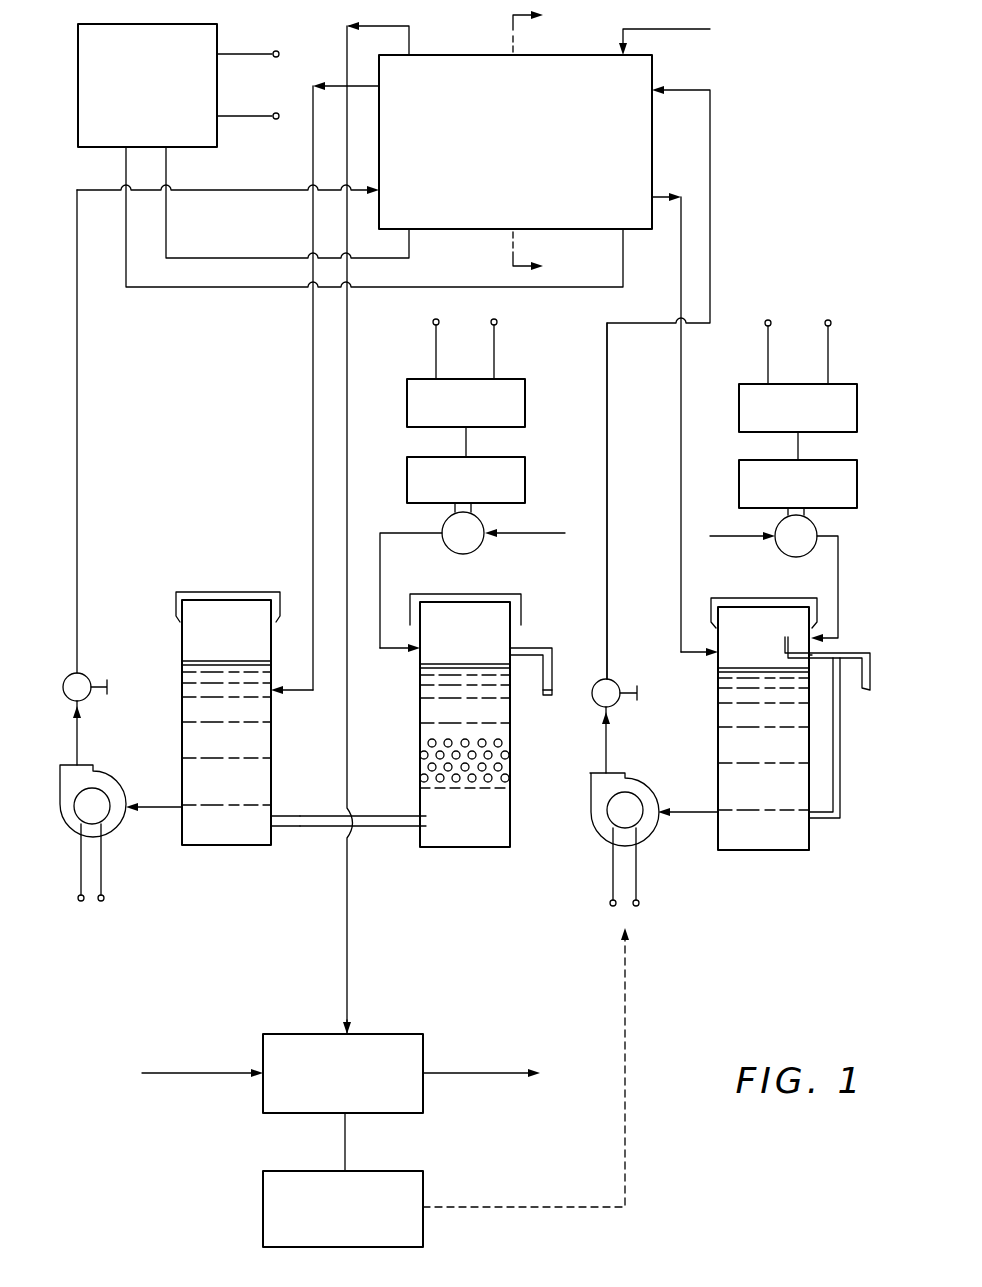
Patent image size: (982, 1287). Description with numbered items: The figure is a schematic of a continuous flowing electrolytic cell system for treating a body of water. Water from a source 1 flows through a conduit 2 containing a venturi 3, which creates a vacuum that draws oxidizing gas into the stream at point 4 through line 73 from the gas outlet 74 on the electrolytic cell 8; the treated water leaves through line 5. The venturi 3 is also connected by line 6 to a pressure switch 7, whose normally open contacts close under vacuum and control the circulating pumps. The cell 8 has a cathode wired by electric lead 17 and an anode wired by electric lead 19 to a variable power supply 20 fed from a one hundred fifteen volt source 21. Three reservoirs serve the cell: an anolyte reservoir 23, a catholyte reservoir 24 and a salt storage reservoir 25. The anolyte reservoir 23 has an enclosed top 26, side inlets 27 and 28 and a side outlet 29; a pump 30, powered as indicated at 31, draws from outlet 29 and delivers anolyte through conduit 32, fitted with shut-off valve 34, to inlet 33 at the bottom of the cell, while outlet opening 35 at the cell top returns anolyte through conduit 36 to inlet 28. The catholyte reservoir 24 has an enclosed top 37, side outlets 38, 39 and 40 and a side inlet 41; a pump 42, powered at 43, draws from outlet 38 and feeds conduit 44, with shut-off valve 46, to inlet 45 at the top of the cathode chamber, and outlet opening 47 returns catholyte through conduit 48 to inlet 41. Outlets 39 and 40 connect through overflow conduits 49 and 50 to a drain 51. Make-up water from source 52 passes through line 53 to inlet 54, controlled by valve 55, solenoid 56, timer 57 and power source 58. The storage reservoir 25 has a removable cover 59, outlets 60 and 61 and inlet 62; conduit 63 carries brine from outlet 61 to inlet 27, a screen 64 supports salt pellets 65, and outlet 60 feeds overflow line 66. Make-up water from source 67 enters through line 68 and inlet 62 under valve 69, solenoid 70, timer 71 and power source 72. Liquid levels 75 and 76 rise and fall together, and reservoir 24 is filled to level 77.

The source of flowing water 1 is at (146, 1076).
The conduit 2 is at (240, 1068).
The venturi 3 is at (300, 1033).
The gas draw-in point 4 is at (349, 1033).
The line 5 is at (478, 1072).
The line 6 is at (343, 1138).
The pressure switch 7 is at (263, 1208).
The electrolytic cell 8 is at (524, 190).
The electric lead 17 is at (392, 259).
The electric lead 19 is at (606, 289).
The variable power supply 20 is at (217, 138).
The 115 volt power source 21 is at (296, 60).
The anolyte reservoir 23 is at (234, 836).
The catholyte reservoir 24 is at (768, 838).
The storage reservoir 25 is at (480, 845).
The enclosed top 26 is at (234, 592).
The side inlet 27 is at (275, 830).
The upper inlet opening 28 is at (275, 698).
The side outlet 29 is at (178, 805).
The pump 30 is at (113, 820).
The 115 VAC power 31 is at (114, 930).
The conduit 32 is at (78, 443).
The inlet 33 is at (372, 197).
The shut-off valve 34 is at (82, 682).
The outlet opening 35 is at (372, 95).
The conduit 36 is at (313, 425).
The enclosed top 37 is at (720, 598).
The side outlet 38 is at (716, 816).
The side outlet 39 is at (812, 830).
The side outlet 40 is at (808, 658).
The side inlet 41 is at (716, 664).
The pump 42 is at (640, 792).
The 115 VAC power 43 is at (608, 928).
The conduit 44 is at (681, 455).
The inlet 45 is at (657, 85).
The shut-off valve 46 is at (610, 684).
The outlet opening 47 is at (655, 195).
The conduit 48 is at (606, 442).
The overflow conduit 49 is at (842, 770).
The overflow conduit 50 is at (786, 645).
The overflow line or drain 51 is at (870, 692).
The make-up water source 52 is at (754, 538).
The conduit or line 53 is at (840, 596).
The inlet opening 54 is at (825, 646).
The valve 55 is at (810, 528).
The solenoid 56 is at (739, 465).
The timer 57 is at (739, 388).
The 115 VAC power source 58 is at (800, 292).
The removable top or cover 59 is at (505, 595).
The side outlet 60 is at (512, 662).
The side outlet 61 is at (418, 815).
The top side inlet 62 is at (417, 655).
The conduit 63 is at (367, 830).
The screen 64 is at (458, 790).
The salt granules or pellets 65 is at (463, 742).
The overflow line 66 is at (555, 660).
The make-up water source 67 is at (520, 533).
The conduit or line 68 is at (402, 530).
The valve 69 is at (452, 548).
The solenoid 70 is at (407, 465).
The timer 71 is at (407, 390).
The 115 VAC power source 72 is at (452, 310).
The line 73 is at (345, 955).
The outlet 74 is at (410, 55).
The water level 75 is at (460, 664).
The water level 76 is at (230, 661).
The water level 77 is at (755, 668).